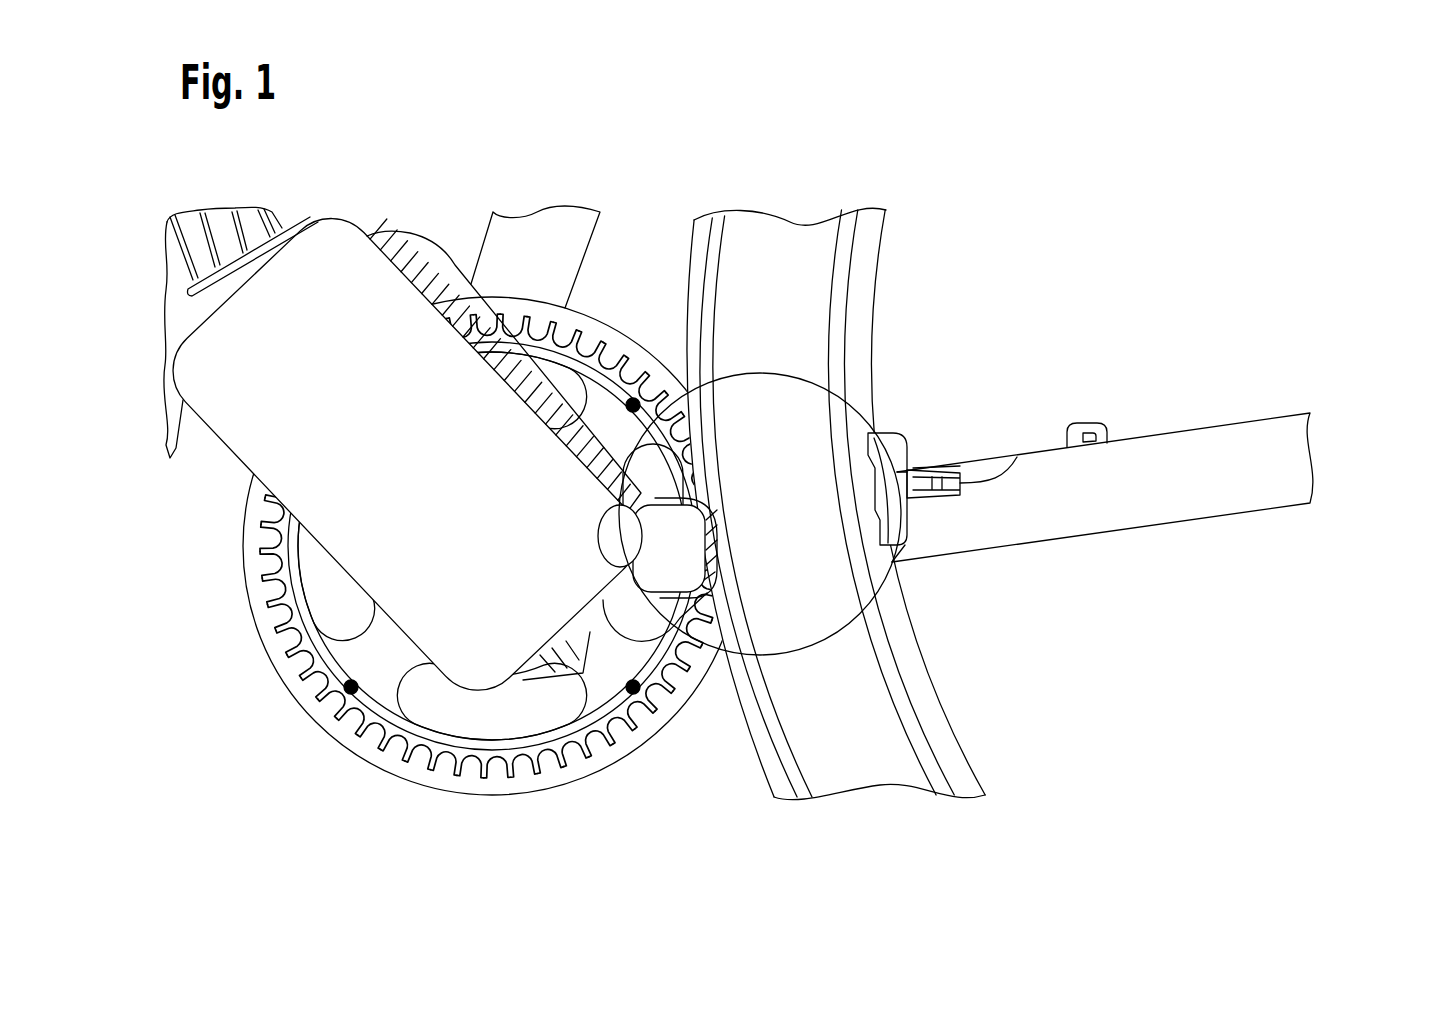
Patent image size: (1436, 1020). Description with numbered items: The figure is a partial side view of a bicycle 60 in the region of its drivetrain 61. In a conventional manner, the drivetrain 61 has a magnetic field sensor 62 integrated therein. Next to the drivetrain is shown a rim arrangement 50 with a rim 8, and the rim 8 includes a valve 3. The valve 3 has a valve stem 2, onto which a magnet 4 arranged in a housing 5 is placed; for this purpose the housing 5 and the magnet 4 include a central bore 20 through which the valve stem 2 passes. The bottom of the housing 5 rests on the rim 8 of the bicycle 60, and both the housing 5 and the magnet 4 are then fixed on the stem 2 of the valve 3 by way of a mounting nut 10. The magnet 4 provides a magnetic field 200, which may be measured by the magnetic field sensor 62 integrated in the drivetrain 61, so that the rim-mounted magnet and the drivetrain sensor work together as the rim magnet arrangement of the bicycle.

The valve stem 2 is at (1017, 457).
The valve 3 is at (977, 443).
The magnet 4 is at (918, 453).
The housing 5 is at (893, 419).
The rim 8 is at (932, 766).
The mounting nut 10 is at (980, 422).
The central bore 20 is at (925, 511).
The rim arrangement 50 is at (863, 451).
The bicycle 60 is at (1352, 231).
The drivetrain 61 is at (256, 428).
The magnetic field sensor 62 is at (603, 496).
The magnetic field 200 is at (884, 610).